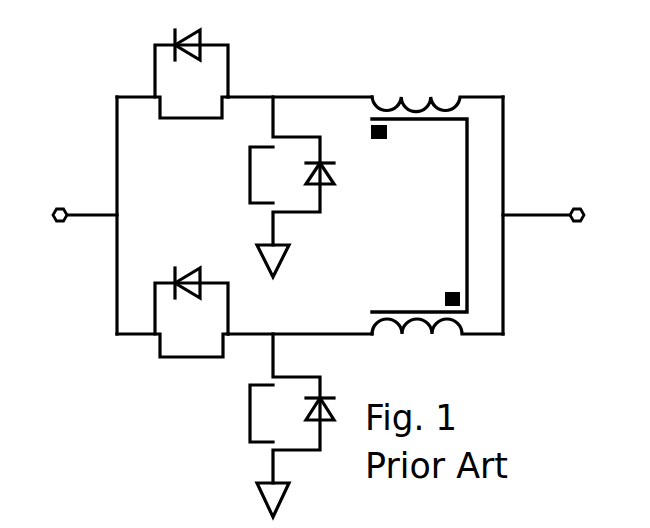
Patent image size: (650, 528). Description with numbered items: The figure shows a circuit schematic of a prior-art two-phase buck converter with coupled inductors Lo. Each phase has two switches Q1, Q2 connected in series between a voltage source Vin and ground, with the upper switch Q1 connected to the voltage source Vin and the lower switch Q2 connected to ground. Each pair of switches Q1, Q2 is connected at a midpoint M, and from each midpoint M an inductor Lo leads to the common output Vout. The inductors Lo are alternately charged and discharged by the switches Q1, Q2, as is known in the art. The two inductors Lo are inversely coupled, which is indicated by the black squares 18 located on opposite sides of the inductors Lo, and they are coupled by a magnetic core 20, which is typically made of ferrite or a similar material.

The black squares 18 is at (380, 139).
The magnetic core 20 is at (466, 212).
The switch Q1 is at (172, 193).
The switch Q2 is at (292, 307).
The coupled inductors Lo is at (402, 97).
The midpoint M is at (273, 97).
The voltage source Vin is at (78, 197).
The output voltage Vout is at (559, 197).